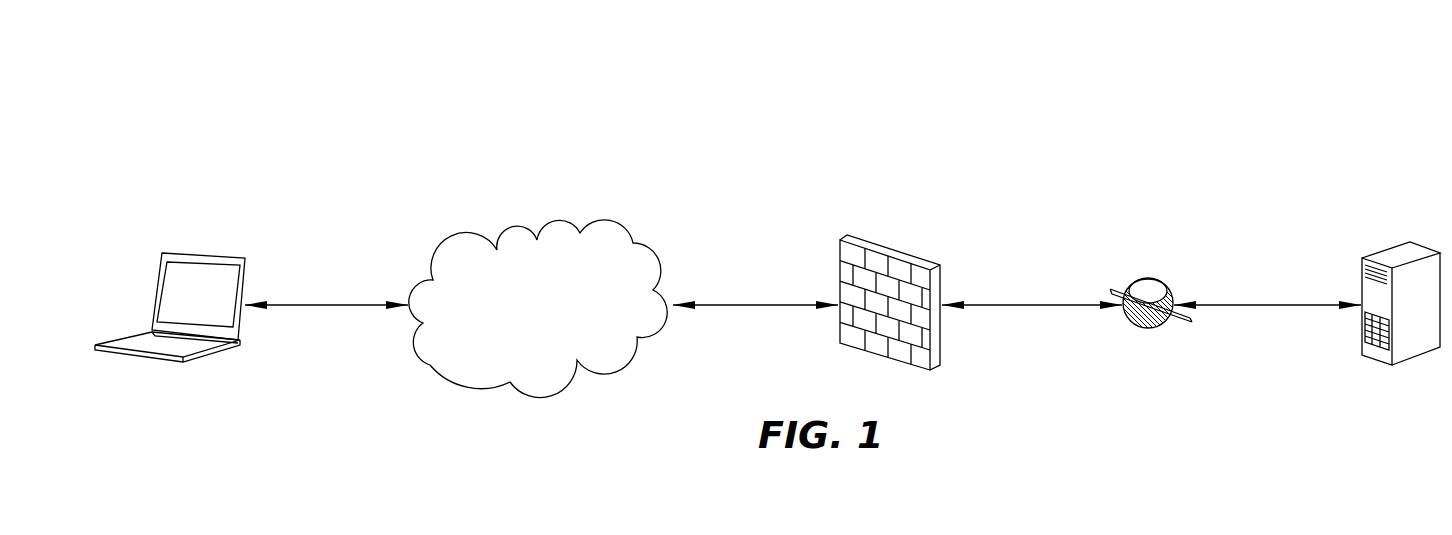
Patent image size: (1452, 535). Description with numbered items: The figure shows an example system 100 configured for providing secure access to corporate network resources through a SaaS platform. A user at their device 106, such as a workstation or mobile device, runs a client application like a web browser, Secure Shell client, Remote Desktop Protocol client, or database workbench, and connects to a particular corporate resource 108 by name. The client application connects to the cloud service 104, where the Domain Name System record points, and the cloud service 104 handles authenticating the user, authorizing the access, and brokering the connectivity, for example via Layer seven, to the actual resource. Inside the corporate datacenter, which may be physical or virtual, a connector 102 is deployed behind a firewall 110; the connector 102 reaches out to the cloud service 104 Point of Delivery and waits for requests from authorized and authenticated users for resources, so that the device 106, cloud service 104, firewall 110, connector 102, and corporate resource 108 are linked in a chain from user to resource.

The system 100 is at (1359, 62).
The connector 102 is at (1160, 277).
The cloud service 104 is at (519, 335).
The device 106 is at (237, 253).
The corporate resource 108 is at (1388, 247).
The firewall 110 is at (905, 253).